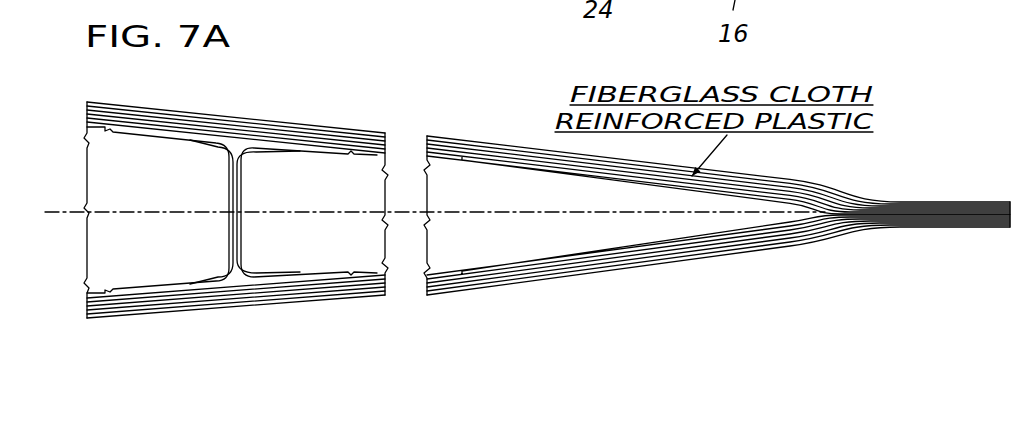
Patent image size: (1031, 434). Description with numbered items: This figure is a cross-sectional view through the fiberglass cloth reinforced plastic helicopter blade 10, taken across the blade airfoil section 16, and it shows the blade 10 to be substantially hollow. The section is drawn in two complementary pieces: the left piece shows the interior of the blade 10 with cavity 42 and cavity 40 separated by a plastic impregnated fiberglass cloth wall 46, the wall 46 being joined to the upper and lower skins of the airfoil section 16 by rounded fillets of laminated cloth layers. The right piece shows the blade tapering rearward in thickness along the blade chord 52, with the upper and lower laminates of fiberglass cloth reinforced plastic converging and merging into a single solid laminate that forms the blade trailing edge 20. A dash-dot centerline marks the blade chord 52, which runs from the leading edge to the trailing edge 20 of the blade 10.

The fiberglass cloth reinforced plastic helicopter blade 10 is at (532, 214).
The blade airfoil section 16 is at (146, 316).
The blade trailing edge 20 is at (1012, 212).
The cavity 40 is at (324, 195).
The cavity 42 is at (145, 192).
The plastic impregnated fiberglass cloth wall 46 is at (233, 245).
The blade chord 52 is at (519, 212).